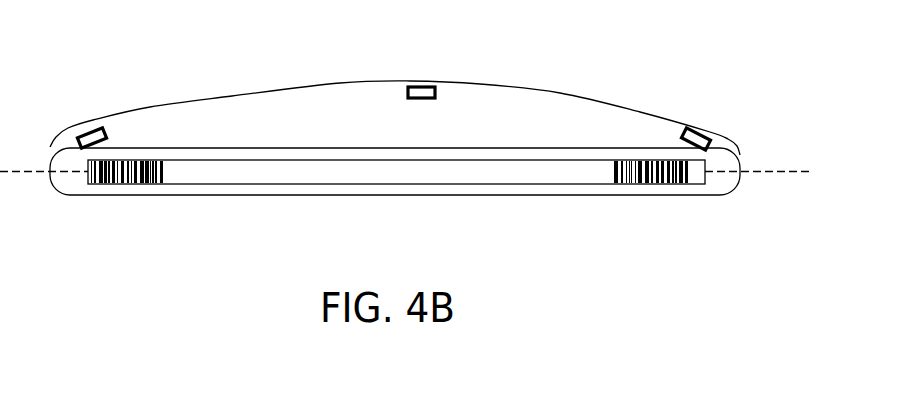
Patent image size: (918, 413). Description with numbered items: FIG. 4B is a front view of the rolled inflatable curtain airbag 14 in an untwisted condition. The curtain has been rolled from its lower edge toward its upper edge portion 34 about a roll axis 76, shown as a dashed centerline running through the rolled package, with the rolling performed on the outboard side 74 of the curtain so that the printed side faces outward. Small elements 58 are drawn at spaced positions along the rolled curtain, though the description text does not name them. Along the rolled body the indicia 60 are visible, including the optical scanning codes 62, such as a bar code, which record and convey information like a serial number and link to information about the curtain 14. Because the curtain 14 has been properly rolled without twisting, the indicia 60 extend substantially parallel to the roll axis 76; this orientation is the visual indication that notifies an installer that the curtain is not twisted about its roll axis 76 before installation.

The inflatable curtain airbag 14 is at (382, 142).
The upper edge portion 34 is at (642, 112).
The light emitting elements 58 is at (93, 129).
The indicia 60 is at (402, 189).
The optical scanning codes 62 is at (142, 185).
The outboard side 74 is at (232, 122).
The roll axis 76 is at (780, 173).